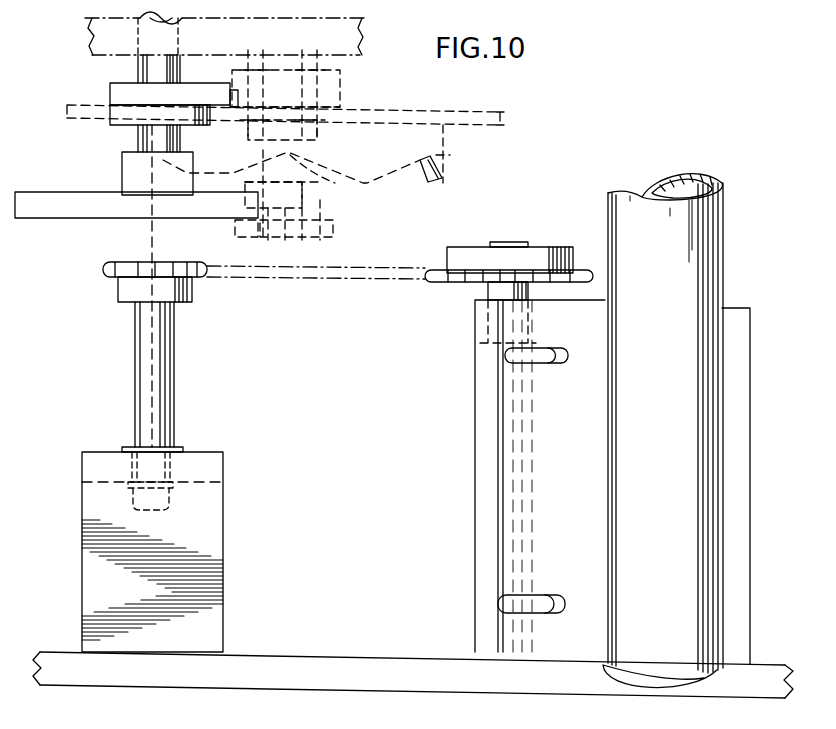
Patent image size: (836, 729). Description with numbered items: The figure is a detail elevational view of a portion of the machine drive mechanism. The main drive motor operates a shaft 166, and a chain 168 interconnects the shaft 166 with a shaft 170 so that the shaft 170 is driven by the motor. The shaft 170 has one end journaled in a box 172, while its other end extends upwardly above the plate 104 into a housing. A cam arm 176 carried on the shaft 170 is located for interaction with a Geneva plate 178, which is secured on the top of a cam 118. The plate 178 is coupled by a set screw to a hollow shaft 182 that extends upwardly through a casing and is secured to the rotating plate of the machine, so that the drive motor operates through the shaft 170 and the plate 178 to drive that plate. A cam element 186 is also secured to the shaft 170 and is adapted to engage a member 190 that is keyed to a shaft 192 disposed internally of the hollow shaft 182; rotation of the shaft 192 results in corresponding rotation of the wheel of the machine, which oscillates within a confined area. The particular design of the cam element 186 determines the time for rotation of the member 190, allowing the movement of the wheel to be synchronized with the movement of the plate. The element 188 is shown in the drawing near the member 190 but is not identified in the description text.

The drive shaft 104 is at (90, 38).
The collar 176 is at (120, 125).
The arm 178 is at (505, 116).
The bracket 182 is at (340, 68).
The belt 118 is at (448, 163).
The plate 186 is at (48, 218).
The block 190 is at (318, 203).
The cable 192 is at (305, 186).
The support 188 is at (278, 234).
The link rod 168 is at (322, 280).
The collar 166 is at (488, 288).
The shaft 170 is at (165, 372).
The base block 172 is at (211, 534).